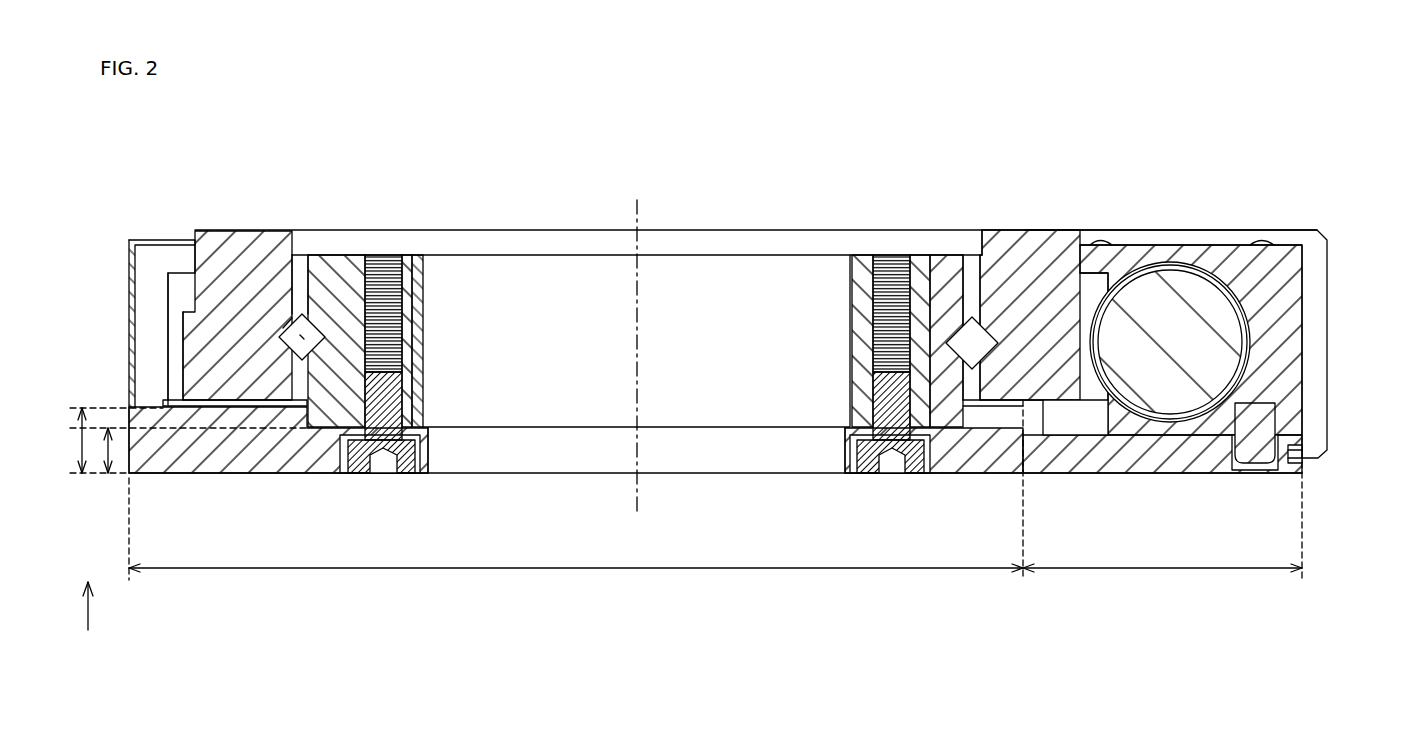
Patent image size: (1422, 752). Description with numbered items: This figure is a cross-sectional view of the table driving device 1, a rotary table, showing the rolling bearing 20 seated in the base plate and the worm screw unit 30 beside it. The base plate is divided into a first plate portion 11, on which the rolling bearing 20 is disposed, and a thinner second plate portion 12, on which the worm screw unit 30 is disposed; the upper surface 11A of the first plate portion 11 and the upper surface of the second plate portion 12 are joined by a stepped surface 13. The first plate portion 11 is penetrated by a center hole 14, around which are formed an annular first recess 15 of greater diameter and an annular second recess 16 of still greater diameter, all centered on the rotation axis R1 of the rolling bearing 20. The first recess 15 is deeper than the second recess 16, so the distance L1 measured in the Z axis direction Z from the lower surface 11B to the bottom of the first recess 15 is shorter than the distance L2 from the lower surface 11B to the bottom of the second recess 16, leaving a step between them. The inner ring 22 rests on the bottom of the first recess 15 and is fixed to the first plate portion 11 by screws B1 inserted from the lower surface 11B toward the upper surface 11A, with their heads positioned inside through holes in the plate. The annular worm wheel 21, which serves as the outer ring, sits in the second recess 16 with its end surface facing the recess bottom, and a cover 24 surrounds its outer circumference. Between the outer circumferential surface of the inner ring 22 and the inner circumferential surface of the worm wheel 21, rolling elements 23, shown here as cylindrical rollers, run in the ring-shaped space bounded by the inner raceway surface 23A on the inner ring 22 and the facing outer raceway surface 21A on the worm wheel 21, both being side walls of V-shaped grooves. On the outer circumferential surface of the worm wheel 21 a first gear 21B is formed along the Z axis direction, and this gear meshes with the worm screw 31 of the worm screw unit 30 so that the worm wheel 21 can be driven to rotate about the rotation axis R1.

The table driving device 1 is at (1303, 190).
The first plate portion 11 is at (572, 572).
The upper surface 11A is at (147, 403).
The lower surface 11B is at (158, 476).
The second plate portion 12 is at (1160, 572).
The stepped surface 13 is at (1032, 437).
The center hole 14 is at (436, 445).
The first recess 15 is at (415, 400).
The second recess 16 is at (208, 400).
The rolling bearing 20 is at (370, 180).
The worm wheel 21 is at (265, 248).
The outer raceway surface 21A is at (289, 330).
The first gear 21B is at (175, 333).
The inner ring 22 is at (340, 272).
The rolling elements 23 is at (313, 333).
The inner raceway surface 23A is at (317, 348).
The cover 24 is at (130, 297).
The worm screw unit 30 is at (1349, 298).
The worm screw 31 is at (1170, 290).
The screws B1 is at (396, 460).
The distance L1 is at (107, 450).
The distance L2 is at (80, 447).
The rotation axis R1 is at (640, 205).
The Z axis direction Z is at (87, 591).